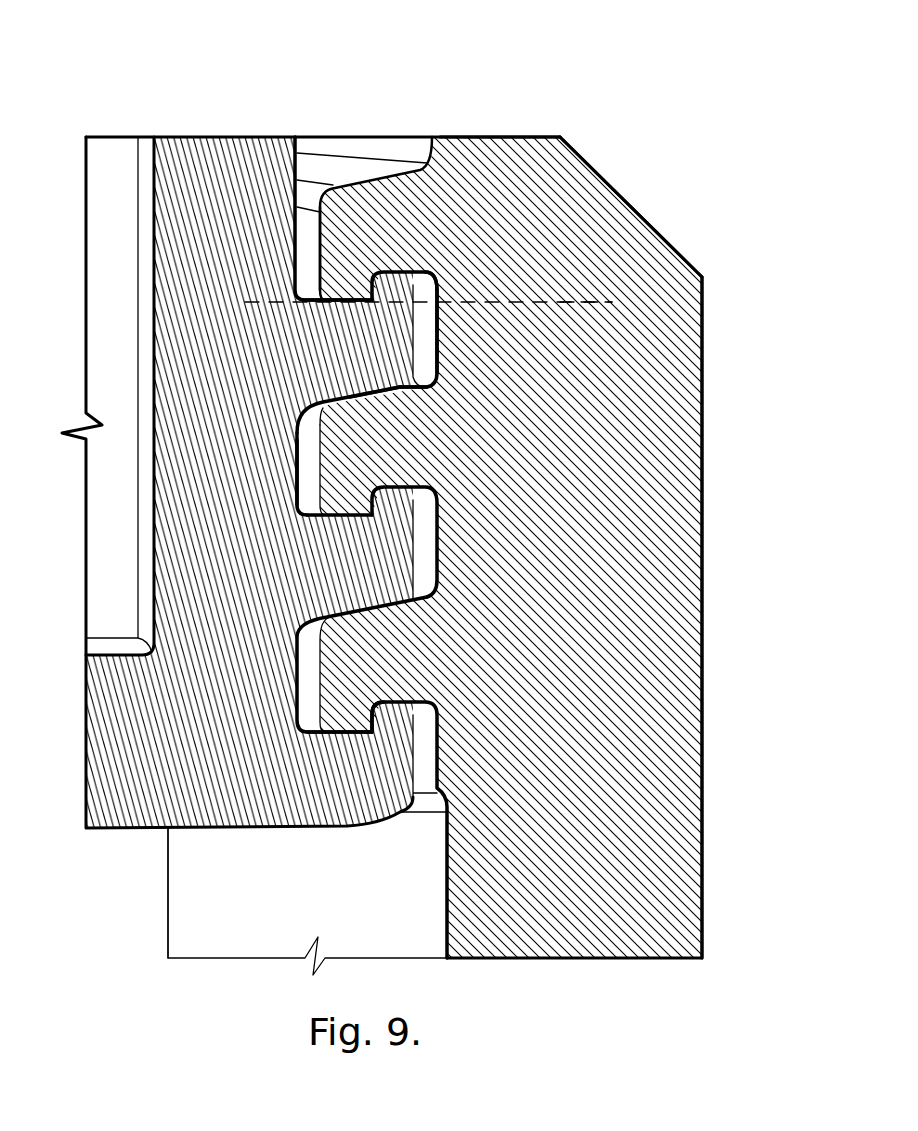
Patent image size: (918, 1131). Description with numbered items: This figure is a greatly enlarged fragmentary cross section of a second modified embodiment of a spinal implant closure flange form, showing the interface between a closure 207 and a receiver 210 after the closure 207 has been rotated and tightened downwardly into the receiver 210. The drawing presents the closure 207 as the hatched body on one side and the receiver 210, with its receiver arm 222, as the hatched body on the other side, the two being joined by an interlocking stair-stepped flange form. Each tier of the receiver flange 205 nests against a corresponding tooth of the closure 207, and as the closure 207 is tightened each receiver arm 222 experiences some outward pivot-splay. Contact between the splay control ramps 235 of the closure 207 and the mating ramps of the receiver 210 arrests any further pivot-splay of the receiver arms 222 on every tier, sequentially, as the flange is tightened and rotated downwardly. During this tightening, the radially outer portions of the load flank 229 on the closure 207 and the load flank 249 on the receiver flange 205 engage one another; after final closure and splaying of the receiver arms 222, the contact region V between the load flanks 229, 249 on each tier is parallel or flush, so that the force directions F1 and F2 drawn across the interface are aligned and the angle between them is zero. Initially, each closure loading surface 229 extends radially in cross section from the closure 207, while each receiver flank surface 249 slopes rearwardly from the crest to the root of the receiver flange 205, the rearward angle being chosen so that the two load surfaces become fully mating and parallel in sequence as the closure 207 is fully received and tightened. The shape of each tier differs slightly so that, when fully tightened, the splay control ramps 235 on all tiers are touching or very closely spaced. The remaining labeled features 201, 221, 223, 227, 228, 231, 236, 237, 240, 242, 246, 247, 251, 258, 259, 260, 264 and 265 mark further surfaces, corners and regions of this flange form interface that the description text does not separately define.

The threaded connection 201 is at (648, 155).
The receiver flange 205 is at (360, 207).
The closure 207 is at (190, 160).
The receiver 210 is at (705, 628).
The pin end 221 is at (115, 873).
The receiver arm 222 is at (705, 498).
The shoulder surface 223 is at (483, 137).
The pin surface 227 is at (297, 165).
The load flank 228 is at (298, 512).
The load flank 229 is at (325, 738).
The pin tooth 231 is at (413, 342).
The splay control ramp 235 is at (368, 535).
The pin tooth 236 is at (355, 740).
The stab flank 237 is at (377, 692).
The box tooth 240 is at (413, 713).
The stab flank 242 is at (305, 398).
The root surface 246 is at (298, 418).
The gap 247 is at (430, 326).
The load flank 249 is at (318, 262).
The root 251 is at (298, 467).
The crest surface 258 is at (420, 272).
The corner 259 is at (440, 284).
The contact surface 260 is at (425, 388).
The corner 264 is at (402, 388).
The box tooth 265 is at (347, 470).
The contact area V is at (357, 303).
The load force direction F1 is at (575, 303).
The load force direction F2 is at (574, 300).